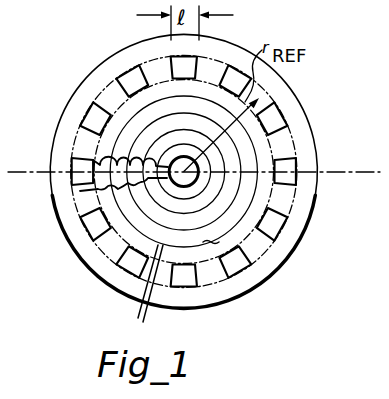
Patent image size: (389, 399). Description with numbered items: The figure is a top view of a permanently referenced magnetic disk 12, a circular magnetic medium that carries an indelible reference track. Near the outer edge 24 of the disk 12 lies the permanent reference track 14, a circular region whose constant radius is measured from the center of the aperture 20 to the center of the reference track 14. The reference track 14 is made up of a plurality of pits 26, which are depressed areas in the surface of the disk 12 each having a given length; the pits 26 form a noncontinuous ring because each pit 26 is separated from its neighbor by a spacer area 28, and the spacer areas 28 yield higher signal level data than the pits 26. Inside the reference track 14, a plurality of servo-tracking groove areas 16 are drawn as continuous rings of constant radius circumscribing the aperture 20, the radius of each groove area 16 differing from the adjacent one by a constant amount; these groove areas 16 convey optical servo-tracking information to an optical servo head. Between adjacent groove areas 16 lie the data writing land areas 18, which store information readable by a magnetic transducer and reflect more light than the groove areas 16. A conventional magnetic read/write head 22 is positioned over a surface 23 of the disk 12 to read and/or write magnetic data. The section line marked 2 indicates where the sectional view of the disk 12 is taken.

The permanently referenced magnetic disk 12 is at (237, 314).
The permanent reference track 14 is at (76, 141).
The servo-tracking groove areas 16 is at (92, 158).
The data writing land areas 18 is at (80, 191).
The aperture 20 is at (183, 156).
The magnetic read/write head 22 is at (152, 218).
The surface 23 is at (185, 228).
The outer edge 24 is at (303, 236).
The pits 26 is at (97, 98).
The spacer areas 28 is at (149, 63).
The section line 2- 2 is at (21, 143).